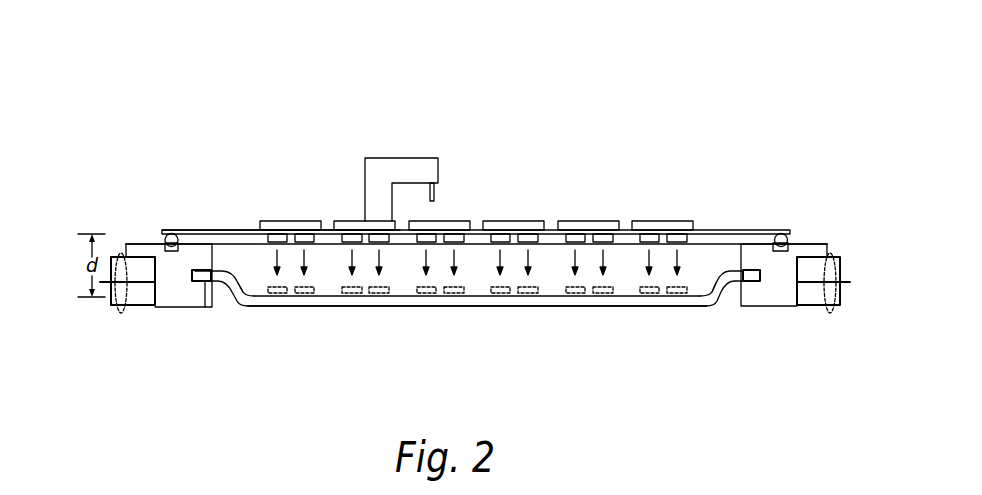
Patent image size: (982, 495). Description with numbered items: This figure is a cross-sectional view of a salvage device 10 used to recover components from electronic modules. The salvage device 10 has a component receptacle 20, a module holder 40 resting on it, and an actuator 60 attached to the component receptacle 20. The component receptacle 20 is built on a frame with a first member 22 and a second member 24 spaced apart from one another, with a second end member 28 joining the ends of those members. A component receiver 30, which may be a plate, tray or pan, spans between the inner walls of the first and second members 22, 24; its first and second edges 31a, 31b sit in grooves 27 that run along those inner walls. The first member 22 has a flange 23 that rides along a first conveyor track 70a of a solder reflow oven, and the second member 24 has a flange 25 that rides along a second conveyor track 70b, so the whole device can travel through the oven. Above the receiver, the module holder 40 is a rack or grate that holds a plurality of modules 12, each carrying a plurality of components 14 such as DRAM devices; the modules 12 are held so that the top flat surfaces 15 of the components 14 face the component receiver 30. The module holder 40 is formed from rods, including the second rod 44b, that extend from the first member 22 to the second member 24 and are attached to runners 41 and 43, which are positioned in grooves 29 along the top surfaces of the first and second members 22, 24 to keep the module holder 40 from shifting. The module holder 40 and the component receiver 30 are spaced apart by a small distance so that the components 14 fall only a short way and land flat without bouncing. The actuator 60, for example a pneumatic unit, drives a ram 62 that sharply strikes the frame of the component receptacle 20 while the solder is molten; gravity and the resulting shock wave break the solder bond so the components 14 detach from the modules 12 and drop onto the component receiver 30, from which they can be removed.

The salvage device 10 is at (548, 106).
The module 12 is at (290, 221).
The component 14 is at (278, 236).
The top flat surface 15 is at (349, 245).
The component receptacle 20 is at (708, 340).
The first member 22 is at (173, 307).
The flange 23 is at (137, 246).
The second member 24 is at (782, 300).
The flange 25 is at (810, 243).
The groove 27 is at (192, 277).
The second end member 28 is at (221, 302).
The groove 29 is at (210, 246).
The component receiver 30 is at (402, 306).
The first edge 31a is at (199, 282).
The second edge 31b is at (735, 288).
The module holder 40 is at (744, 220).
The runner 41 is at (166, 243).
The runner 43 is at (786, 237).
The second rod 44b is at (202, 230).
The actuator 60 is at (380, 165).
The ram 62 is at (436, 192).
The first conveyor track 70a is at (143, 306).
The second conveyor track 70b is at (838, 296).